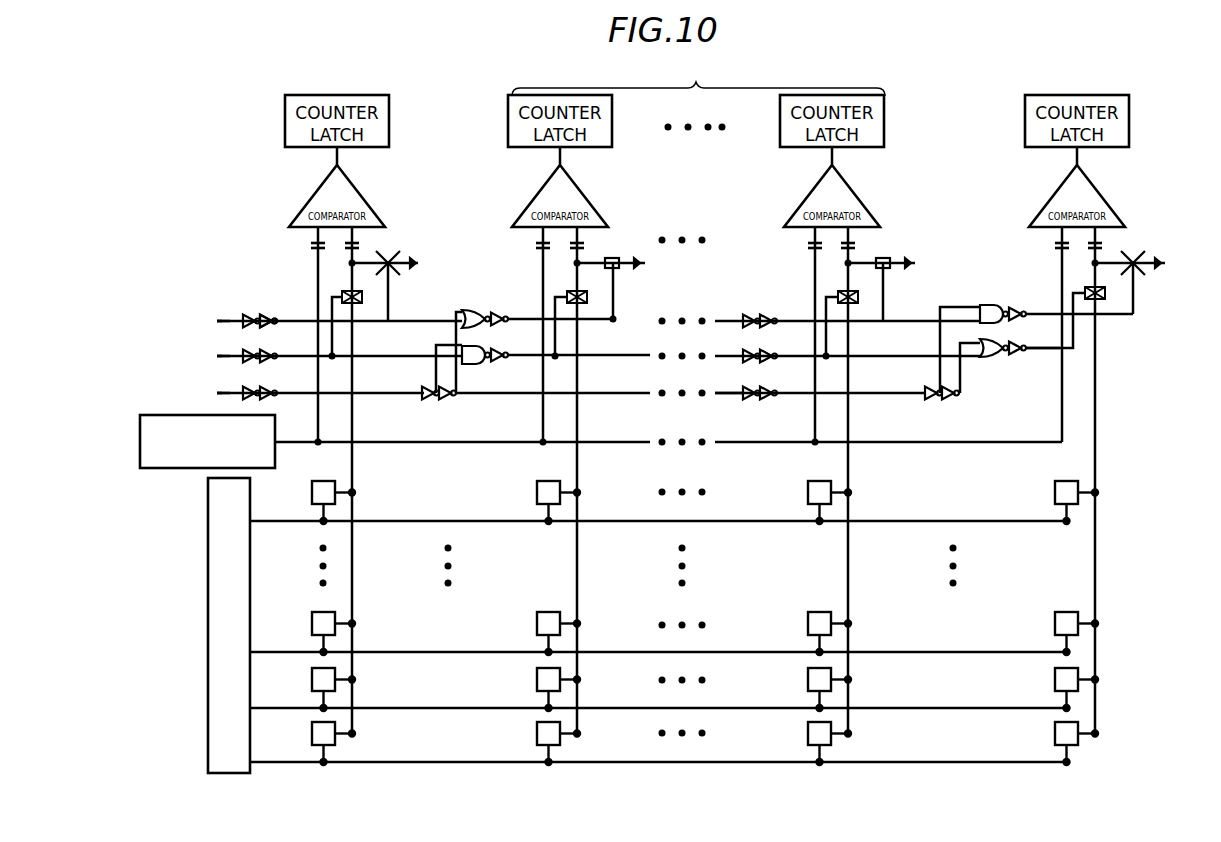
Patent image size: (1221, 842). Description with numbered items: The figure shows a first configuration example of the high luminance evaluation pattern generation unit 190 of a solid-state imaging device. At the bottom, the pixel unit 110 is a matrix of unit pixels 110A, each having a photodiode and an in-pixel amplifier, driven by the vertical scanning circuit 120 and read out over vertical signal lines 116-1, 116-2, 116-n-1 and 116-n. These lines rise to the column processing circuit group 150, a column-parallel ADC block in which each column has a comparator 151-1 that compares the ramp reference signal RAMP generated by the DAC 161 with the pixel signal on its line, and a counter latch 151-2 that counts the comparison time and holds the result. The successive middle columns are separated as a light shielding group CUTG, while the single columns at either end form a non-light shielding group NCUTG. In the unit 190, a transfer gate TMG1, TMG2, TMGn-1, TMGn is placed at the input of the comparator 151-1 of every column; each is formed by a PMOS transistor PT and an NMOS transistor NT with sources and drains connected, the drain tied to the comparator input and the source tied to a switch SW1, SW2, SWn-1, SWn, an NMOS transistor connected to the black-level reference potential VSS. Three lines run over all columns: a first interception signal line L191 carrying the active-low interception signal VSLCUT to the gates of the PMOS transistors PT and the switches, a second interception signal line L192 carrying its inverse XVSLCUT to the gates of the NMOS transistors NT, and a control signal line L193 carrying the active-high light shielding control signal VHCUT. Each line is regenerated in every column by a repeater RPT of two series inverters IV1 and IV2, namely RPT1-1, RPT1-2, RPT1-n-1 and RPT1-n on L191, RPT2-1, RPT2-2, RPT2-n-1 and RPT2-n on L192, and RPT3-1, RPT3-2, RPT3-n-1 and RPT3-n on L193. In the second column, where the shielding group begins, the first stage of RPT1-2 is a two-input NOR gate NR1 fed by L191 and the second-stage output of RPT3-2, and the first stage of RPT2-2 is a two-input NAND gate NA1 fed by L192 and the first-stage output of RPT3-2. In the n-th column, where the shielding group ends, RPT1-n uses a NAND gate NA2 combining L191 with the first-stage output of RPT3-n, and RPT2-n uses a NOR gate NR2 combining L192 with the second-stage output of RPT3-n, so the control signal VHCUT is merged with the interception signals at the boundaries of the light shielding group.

The column processing circuit group 150 is at (274, 160).
The comparator 151-1 is at (356, 187).
The counter latch 151-2 is at (389, 118).
The DAC 161 is at (140, 443).
The high luminance evaluation pattern generation unit 190 is at (139, 287).
The first interception signal line L191 is at (224, 317).
The second interception signal line L192 is at (226, 356).
The control signal line L193 is at (226, 393).
The vertical signal line interception signal VSLCUT is at (167, 322).
The reverse signal of the vertical signal line interception signal XVSLCUT is at (161, 364).
The light shielding control signal VHCUT is at (171, 401).
The repeater RPT1-1 is at (300, 259).
The repeater RPT2-1 is at (276, 338).
The repeater RPT3-1 is at (276, 375).
The repeater RPT1-2 is at (496, 274).
The repeater RPT2-2 is at (478, 364).
The repeater RPT3-2 is at (440, 415).
The repeater RPT1-n-1 is at (764, 302).
The repeater RPT2-n-1 is at (772, 333).
The repeater RPT3-n-1 is at (764, 415).
The repeater RPT is at (758, 384).
The repeater RPT1-n is at (1014, 274).
The repeater RPT2-n is at (1019, 376).
The repeater RPT3-n is at (947, 415).
The first-stage inverter IV1 is at (249, 312).
The second-stage inverter IV2 is at (277, 312).
The two-input NOR gate NR1 is at (472, 308).
The two-input NAND gate NA1 is at (477, 335).
The two-input NOR gate NR2 is at (992, 342).
The two-input NAND gate NA2 is at (992, 305).
The NMOS transistor NT is at (713, 283).
The PMOS transistor PT is at (730, 326).
The transfer gate TMG1 is at (372, 295).
The transfer gate TMG2 is at (598, 294).
The transfer gate TMGn-1 is at (813, 288).
The transfer gate TMGn is at (1114, 291).
The switch SW1 is at (393, 256).
The switch SW2 is at (617, 257).
The switch SWn-1 is at (887, 257).
The switch SWn is at (1133, 257).
The non-light shielding group NCUTG is at (334, 93).
The light shielding group CUTG is at (698, 77).
The reference signal RAMP is at (280, 455).
The vertical scanning circuit 120 is at (206, 626).
The pixel unit 110 is at (636, 559).
The unit pixel 110A is at (338, 742).
The vertical signal line 116-1 is at (353, 586).
The vertical signal line 116-2 is at (578, 586).
The vertical signal line 116-n-1 is at (849, 586).
The vertical signal line 116-n is at (1096, 586).